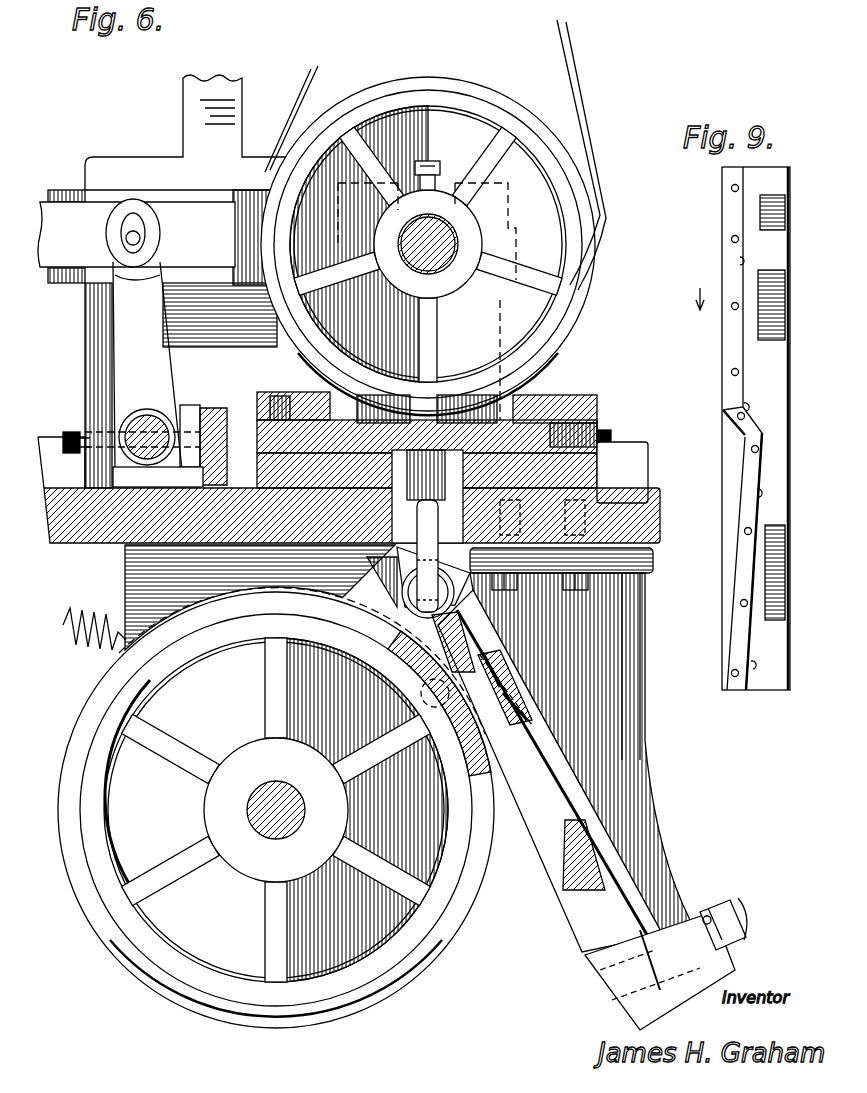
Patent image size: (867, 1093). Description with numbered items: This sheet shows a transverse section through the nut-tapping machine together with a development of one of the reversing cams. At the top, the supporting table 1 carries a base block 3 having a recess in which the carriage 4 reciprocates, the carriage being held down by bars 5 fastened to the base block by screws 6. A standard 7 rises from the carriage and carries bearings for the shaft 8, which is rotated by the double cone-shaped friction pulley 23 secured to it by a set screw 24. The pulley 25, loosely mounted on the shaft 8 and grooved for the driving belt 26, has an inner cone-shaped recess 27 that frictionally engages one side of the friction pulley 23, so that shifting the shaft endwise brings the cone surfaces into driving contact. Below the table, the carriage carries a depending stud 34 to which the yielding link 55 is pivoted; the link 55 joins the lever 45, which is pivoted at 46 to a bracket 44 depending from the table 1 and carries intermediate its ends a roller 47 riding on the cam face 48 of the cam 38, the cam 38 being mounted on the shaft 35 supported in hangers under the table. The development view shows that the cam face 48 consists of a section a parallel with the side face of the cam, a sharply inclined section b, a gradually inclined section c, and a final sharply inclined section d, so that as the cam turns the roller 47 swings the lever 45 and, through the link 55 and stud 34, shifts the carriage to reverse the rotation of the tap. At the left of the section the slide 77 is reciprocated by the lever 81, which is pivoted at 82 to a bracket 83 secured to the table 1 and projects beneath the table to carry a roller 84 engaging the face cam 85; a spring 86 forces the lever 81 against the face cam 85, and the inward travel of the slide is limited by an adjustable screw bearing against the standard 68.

In FIG. 6, the supporting table 1 is at (658, 470).
In FIG. 6, the base block 3 is at (567, 478).
In FIG. 6, the carriage 4 is at (520, 437).
In FIG. 6, the bars 5 is at (597, 410).
In FIG. 6, the screws 6 is at (587, 395).
In FIG. 6, the standard 7 is at (500, 325).
In FIG. 6, the shaft 8 is at (424, 249).
In FIG. 6, the double cone-shaped friction pulley 23 is at (469, 113).
In FIG. 6, the set screw 24 is at (448, 142).
In FIG. 6, the pulley 25 is at (460, 88).
In FIG. 6, the driving belt 26 is at (571, 47).
In FIG. 6, the inner cone-shaped recess 27 is at (373, 95).
In FIG. 6, the depending stud 34 is at (427, 496).
In FIG. 6, the shaft 35 is at (250, 811).
In FIG. 6, the cam 38 is at (287, 997).
In FIG. 9, the cam 38 is at (768, 682).
In FIG. 6, the bracket 44 is at (638, 752).
In FIG. 6, the lever 45 is at (552, 798).
In FIG. 6, the pivot 46 is at (760, 917).
In FIG. 6, the roller 47 is at (487, 747).
In FIG. 9, the cam face 48 is at (758, 492).
In FIG. 6, the link 55 is at (453, 603).
In FIG. 6, the standard 68 is at (117, 165).
In FIG. 6, the slide 77 is at (136, 236).
In FIG. 6, the lever 81 is at (166, 343).
In FIG. 6, the pivot 82 is at (133, 430).
In FIG. 6, the bracket 83 is at (103, 417).
In FIG. 6, the roller 84 is at (395, 688).
In FIG. 6, the face cam 85 is at (202, 940).
In FIG. 6, the spring 86 is at (101, 636).
In FIG. 9, the section a is at (737, 261).
In FIG. 9, the sharply inclined section b is at (735, 403).
In FIG. 6, the gradually inclined section c is at (405, 975).
In FIG. 9, the gradually inclined section c is at (750, 560).
In FIG. 9, the sharply inclined section d is at (748, 658).